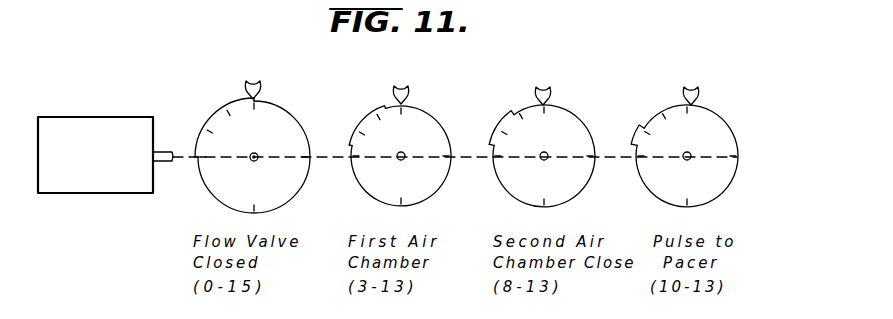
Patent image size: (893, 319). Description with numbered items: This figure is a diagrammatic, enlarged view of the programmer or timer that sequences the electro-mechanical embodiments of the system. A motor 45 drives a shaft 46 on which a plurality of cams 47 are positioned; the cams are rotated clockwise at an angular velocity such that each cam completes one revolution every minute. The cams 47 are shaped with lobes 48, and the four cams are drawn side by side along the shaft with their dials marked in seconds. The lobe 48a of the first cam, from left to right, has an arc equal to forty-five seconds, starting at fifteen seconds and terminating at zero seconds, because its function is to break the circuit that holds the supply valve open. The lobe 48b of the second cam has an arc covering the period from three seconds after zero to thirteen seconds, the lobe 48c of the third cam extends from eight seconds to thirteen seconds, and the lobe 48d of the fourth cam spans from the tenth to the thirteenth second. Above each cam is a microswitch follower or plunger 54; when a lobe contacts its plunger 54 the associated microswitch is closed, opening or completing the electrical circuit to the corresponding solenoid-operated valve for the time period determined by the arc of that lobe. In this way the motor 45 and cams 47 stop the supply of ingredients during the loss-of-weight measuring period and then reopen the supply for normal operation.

The motor 45 is at (82, 168).
The shaft 46 is at (172, 151).
The cams 47 is at (299, 117).
The lobes 48 is at (196, 160).
The lobe of first cam 48a is at (291, 204).
The lobe of second cam 48b is at (358, 121).
The lobe of third cam 48c is at (494, 125).
The lobe of fourth cam 48d is at (633, 134).
The microswitch followers or plungers 54 is at (260, 84).